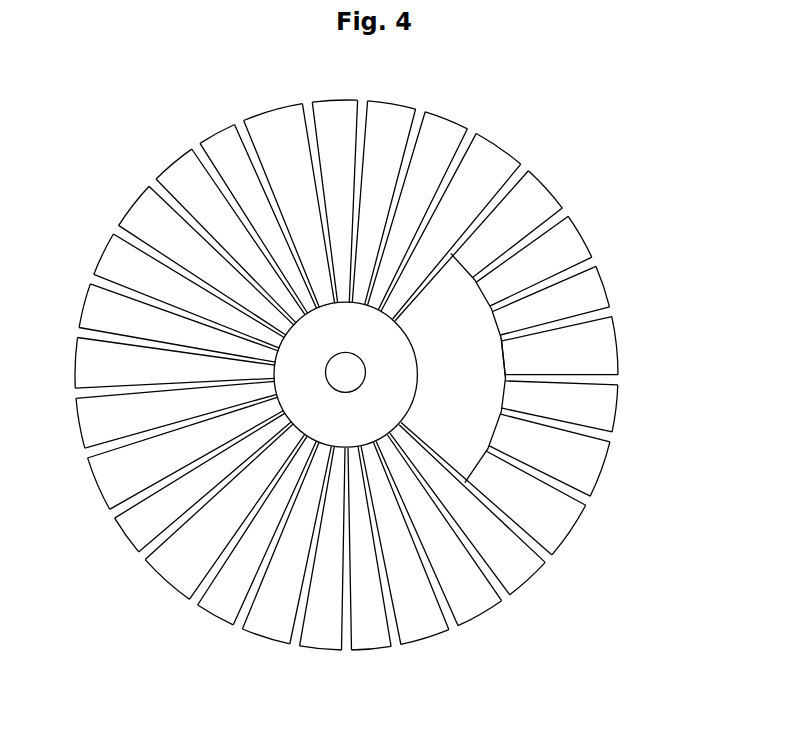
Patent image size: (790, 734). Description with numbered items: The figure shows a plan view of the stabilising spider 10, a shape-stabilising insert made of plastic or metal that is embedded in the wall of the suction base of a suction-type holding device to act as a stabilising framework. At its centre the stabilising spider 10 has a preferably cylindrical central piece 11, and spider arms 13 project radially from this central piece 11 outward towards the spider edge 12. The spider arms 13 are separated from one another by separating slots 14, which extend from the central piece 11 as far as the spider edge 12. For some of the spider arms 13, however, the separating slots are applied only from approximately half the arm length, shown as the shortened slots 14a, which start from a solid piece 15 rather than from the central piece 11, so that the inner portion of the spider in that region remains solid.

The stabilising spider 10 is at (572, 148).
The central piece 11 is at (401, 386).
The spider edge 12 is at (619, 352).
The spider arms 13 is at (605, 418).
The separating slots 14 is at (488, 568).
The separating slots applied from approximately half 14a is at (594, 313).
The solid piece 15 is at (470, 330).